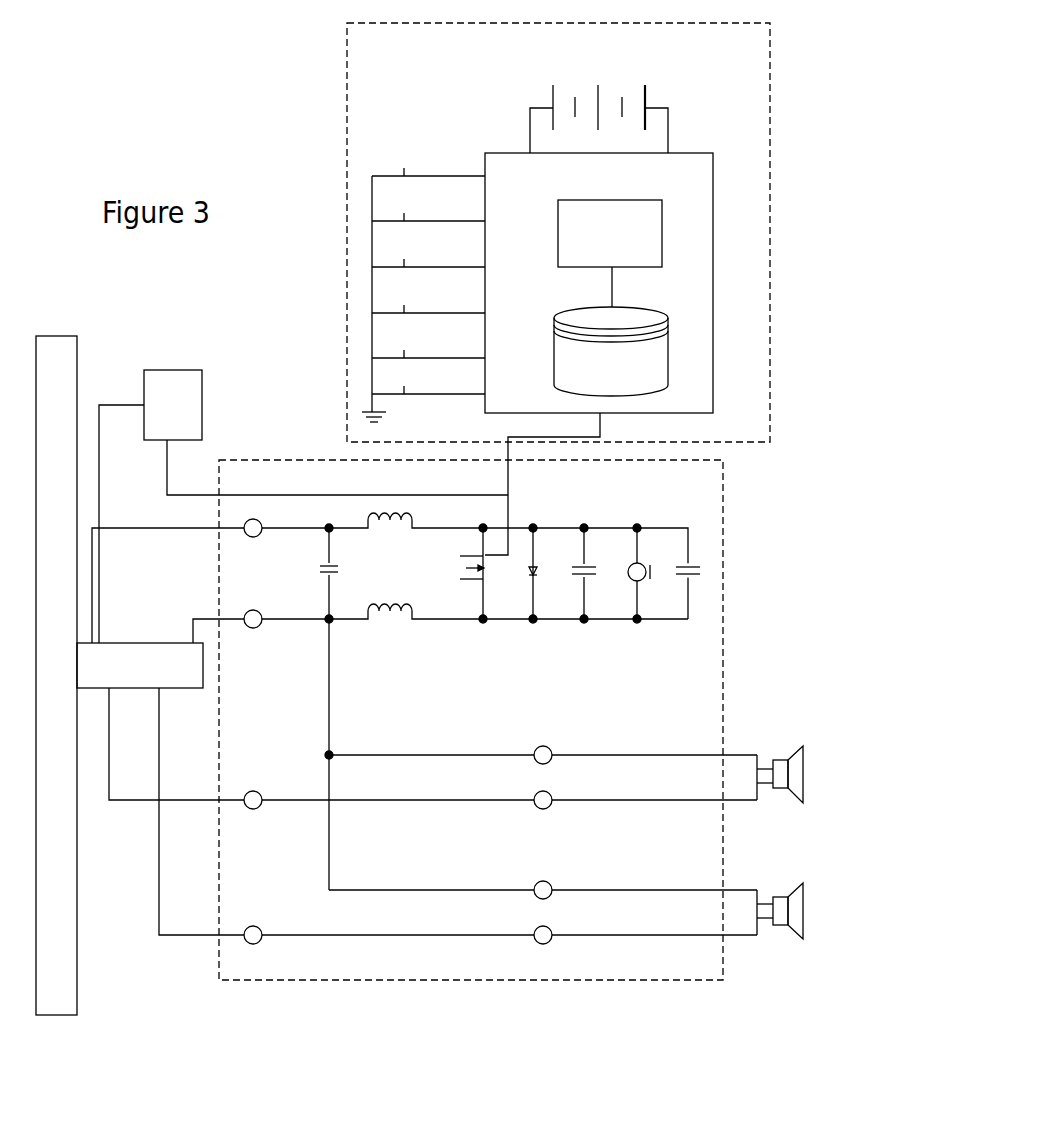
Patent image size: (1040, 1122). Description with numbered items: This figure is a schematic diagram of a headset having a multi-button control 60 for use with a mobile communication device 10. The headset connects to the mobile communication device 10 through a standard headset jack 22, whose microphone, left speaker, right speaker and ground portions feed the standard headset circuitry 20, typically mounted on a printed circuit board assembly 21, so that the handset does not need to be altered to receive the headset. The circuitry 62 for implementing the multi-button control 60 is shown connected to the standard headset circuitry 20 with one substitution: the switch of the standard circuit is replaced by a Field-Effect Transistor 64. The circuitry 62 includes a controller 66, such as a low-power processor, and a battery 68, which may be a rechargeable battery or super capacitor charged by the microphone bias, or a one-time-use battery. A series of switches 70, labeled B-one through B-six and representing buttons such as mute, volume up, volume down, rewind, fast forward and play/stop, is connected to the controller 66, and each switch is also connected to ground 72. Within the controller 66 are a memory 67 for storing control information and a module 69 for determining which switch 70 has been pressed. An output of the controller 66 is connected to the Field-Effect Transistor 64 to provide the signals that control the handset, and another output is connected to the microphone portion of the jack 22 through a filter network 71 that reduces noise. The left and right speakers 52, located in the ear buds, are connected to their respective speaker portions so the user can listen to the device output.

The mobile communication device 10 is at (62, 376).
The standard headset circuitry 20 is at (186, 964).
The printed circuit board assembly 21 is at (692, 482).
The standard headset jack 22 is at (95, 688).
The speakers 52 is at (783, 767).
The multi-button control 60 is at (558, 232).
The circuitry for the multi-button control 62 is at (576, 232).
The Field-Effect Transistor 64 is at (480, 572).
The controller 66 is at (599, 283).
The memory 67 is at (611, 351).
The battery 68 is at (528, 117).
The module 69 is at (610, 233).
The switches 70 is at (398, 174).
The filter network 71 is at (173, 370).
The ground 72 is at (362, 412).